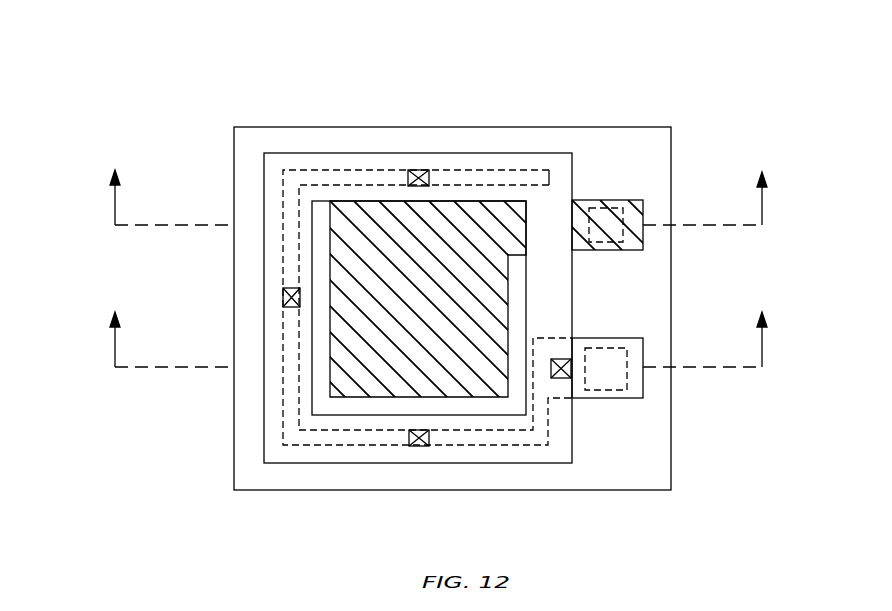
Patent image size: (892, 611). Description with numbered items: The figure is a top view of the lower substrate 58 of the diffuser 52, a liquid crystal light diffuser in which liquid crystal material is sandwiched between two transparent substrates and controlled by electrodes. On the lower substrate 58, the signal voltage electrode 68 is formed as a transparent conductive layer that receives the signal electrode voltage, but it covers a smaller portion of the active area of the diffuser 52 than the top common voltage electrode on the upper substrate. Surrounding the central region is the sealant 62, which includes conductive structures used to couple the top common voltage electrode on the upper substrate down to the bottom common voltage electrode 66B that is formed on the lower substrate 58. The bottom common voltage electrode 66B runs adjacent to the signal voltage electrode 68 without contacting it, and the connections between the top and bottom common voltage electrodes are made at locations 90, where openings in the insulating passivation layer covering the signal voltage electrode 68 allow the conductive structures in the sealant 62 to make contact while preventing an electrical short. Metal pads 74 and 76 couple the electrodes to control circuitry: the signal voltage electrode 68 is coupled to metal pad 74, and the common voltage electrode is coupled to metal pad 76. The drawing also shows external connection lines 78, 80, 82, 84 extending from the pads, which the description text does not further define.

The diffuser 52 is at (676, 68).
The lower substrate 58 is at (656, 285).
The sealant 62 is at (560, 281).
The signal voltage electrode 68 is at (614, 200).
The metal pad 74 is at (622, 221).
The metal pad 76 is at (598, 380).
The bottom common voltage electrode 66B is at (630, 398).
The signal line 78 is at (740, 228).
The first signal path 80 is at (113, 196).
The second signal line 82 is at (173, 367).
The second signal path 84 is at (113, 346).
The locations 90 is at (418, 170).